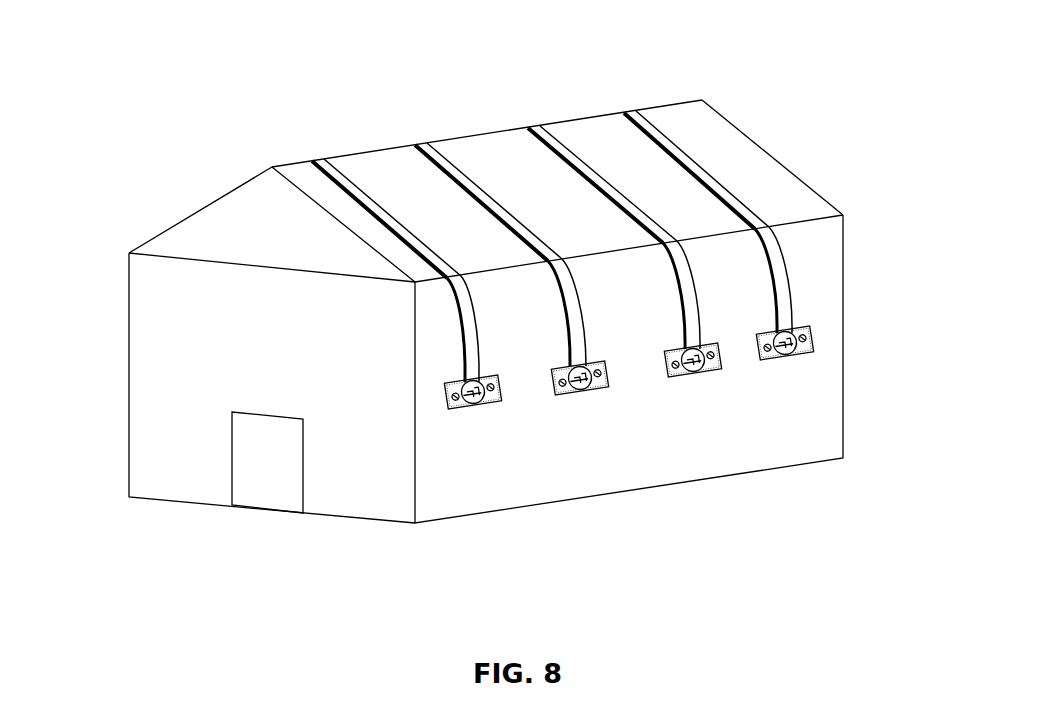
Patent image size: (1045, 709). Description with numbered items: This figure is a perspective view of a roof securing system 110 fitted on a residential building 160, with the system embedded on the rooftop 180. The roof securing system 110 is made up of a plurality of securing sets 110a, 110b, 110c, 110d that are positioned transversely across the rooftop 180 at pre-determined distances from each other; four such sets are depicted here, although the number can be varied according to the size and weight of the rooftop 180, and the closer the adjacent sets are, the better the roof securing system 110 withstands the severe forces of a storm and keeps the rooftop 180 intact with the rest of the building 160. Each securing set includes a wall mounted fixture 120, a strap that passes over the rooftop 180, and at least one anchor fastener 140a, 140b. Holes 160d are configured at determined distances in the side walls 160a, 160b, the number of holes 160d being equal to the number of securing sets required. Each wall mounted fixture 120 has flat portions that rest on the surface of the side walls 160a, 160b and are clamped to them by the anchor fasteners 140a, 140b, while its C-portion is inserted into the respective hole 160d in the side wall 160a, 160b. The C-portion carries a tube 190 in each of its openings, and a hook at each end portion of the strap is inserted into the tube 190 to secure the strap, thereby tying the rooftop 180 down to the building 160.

The roof securing system 110 is at (168, 32).
The first securing set 110a is at (316, 150).
The second securing set 110b is at (420, 135).
The third securing set 110c is at (534, 118).
The fourth securing set 110d is at (626, 102).
The wall mounted fixture 120 is at (422, 420).
The anchor fastener 140a is at (452, 410).
The anchor fastener 140b is at (490, 405).
The building 160 is at (872, 242).
The side wall 160a is at (128, 403).
The side wall 160b is at (818, 433).
The hole 160d is at (810, 347).
The rooftop 180 is at (710, 148).
The tube 190 is at (773, 355).